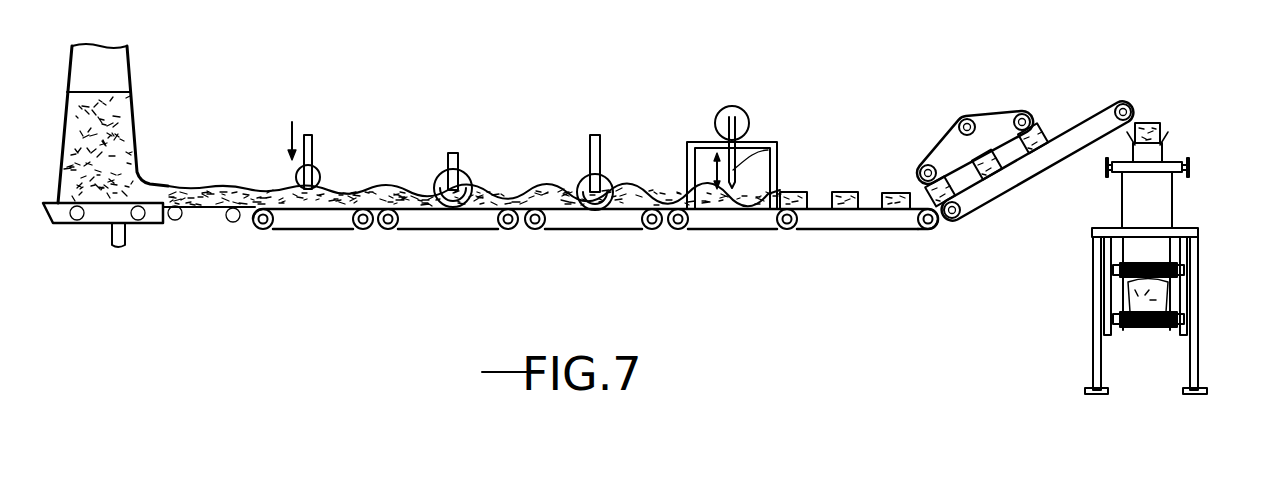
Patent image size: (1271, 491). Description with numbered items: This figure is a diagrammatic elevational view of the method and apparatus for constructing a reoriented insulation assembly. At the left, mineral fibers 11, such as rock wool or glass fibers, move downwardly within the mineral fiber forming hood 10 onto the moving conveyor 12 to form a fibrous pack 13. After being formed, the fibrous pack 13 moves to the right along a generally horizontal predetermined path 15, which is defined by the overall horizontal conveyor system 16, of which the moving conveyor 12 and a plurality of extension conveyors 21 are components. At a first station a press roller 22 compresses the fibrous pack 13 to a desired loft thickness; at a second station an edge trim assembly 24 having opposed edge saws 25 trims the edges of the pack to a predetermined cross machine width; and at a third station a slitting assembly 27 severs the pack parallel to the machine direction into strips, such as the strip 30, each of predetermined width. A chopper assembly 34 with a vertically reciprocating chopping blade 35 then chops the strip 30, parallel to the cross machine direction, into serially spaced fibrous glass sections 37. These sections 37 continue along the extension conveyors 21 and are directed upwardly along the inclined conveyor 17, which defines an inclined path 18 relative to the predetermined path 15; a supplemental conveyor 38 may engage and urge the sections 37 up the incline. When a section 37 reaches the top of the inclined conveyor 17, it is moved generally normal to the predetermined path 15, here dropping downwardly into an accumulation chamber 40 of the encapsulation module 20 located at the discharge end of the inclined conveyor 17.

The mineral fiber forming hood 10 is at (127, 80).
The mineral fibers 11 is at (117, 143).
The moving conveyor 12 is at (205, 207).
The fibrous pack 13 is at (190, 190).
The predetermined path 15 is at (507, 190).
The horizontal conveyor system 16 is at (623, 232).
The inclined conveyor 17 is at (1028, 180).
The inclined path 18 is at (1092, 112).
The encapsulation module 20 is at (1177, 208).
The extension conveyors 21 is at (342, 230).
The press roller 22 is at (318, 172).
The edge trim assembly 24 is at (457, 146).
The edge saws 25 is at (437, 173).
The slitting assembly 27 is at (601, 130).
The strip 30 is at (630, 190).
The chopper assembly 34 is at (754, 114).
The chopping blade 35 is at (777, 143).
The fibrous glass sections 37 is at (795, 192).
The supplemental conveyor 38 is at (955, 120).
The accumulation chamber 40 is at (1165, 145).